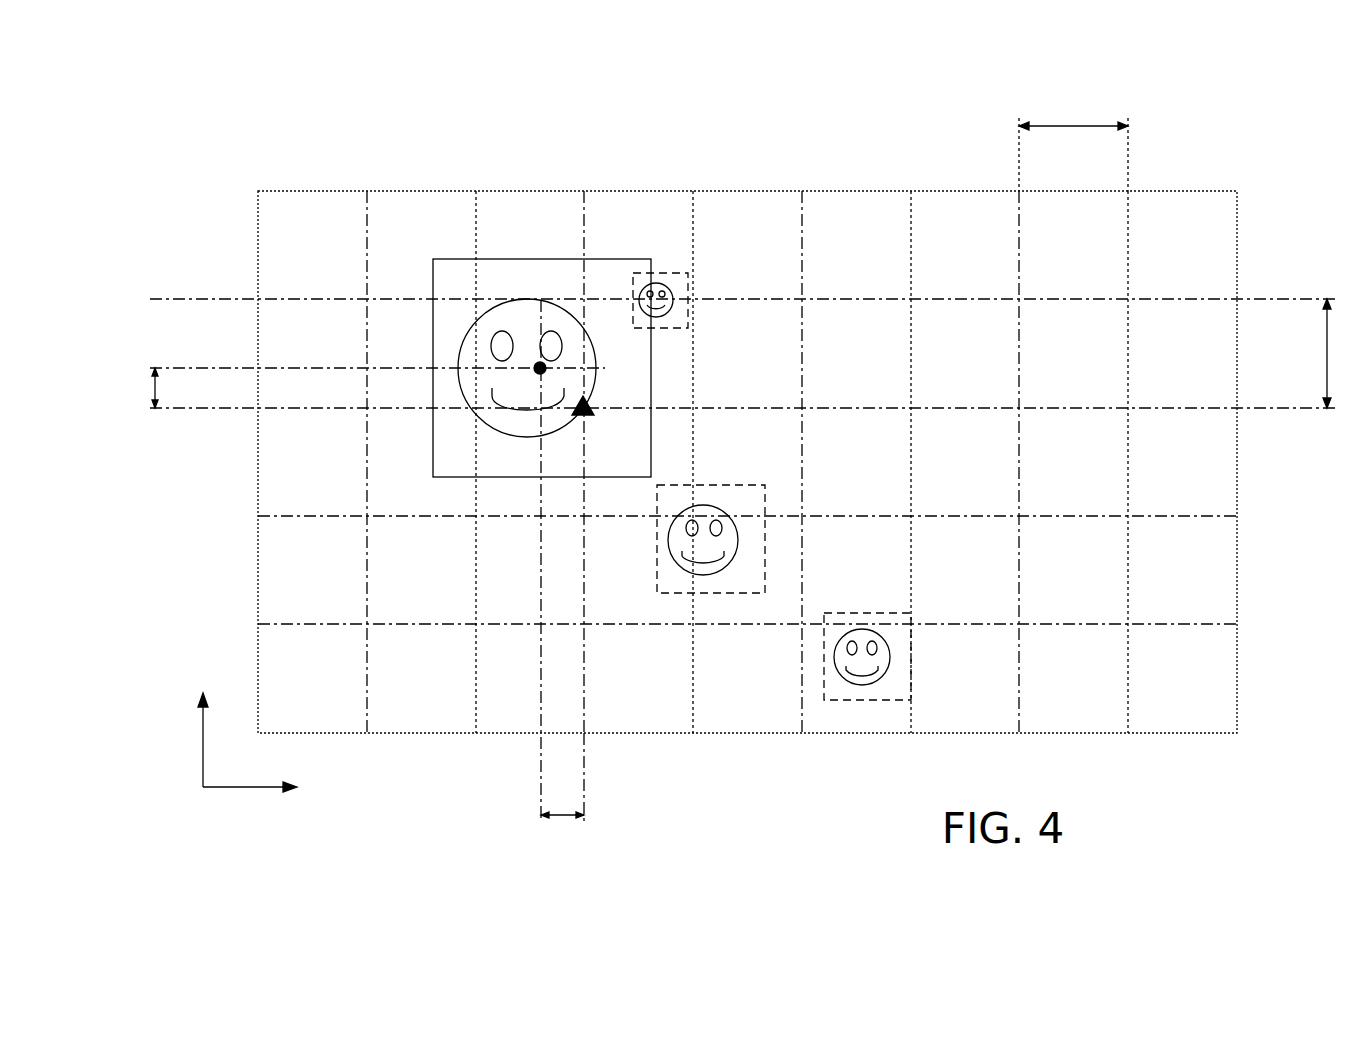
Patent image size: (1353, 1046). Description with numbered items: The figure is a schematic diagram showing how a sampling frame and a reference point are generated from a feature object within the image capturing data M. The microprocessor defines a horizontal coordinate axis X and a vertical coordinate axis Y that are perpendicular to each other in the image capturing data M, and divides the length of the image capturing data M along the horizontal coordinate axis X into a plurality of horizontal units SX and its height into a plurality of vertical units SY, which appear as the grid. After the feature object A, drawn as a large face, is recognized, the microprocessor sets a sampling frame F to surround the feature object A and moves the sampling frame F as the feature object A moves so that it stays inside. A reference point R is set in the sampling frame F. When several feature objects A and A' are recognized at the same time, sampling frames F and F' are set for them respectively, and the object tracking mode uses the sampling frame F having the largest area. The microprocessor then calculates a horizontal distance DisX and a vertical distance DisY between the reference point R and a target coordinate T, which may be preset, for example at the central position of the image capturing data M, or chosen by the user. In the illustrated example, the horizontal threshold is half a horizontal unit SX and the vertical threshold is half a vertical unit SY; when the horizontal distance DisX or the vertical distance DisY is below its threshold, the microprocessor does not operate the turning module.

The image capturing data M is at (1208, 190).
The horizontal unit SX is at (1073, 137).
The vertical unit SY is at (1327, 353).
The horizontal distance DisX is at (559, 581).
The vertical distance DisY is at (363, 429).
The sampling frame F is at (542, 268).
The feature object A is at (523, 261).
The reference point R is at (546, 372).
The target coordinate T is at (590, 415).
The feature object A' is at (795, 398).
The sampling frame F' is at (812, 482).
The horizontal coordinate axis X is at (263, 789).
The vertical coordinate axis Y is at (203, 724).